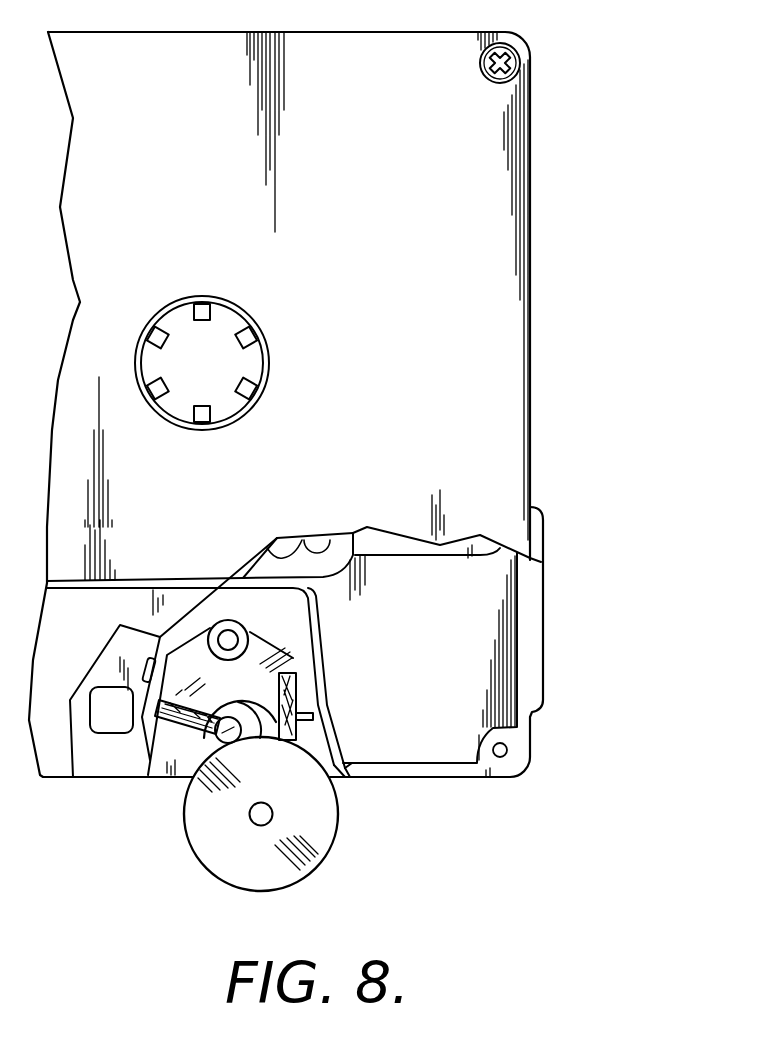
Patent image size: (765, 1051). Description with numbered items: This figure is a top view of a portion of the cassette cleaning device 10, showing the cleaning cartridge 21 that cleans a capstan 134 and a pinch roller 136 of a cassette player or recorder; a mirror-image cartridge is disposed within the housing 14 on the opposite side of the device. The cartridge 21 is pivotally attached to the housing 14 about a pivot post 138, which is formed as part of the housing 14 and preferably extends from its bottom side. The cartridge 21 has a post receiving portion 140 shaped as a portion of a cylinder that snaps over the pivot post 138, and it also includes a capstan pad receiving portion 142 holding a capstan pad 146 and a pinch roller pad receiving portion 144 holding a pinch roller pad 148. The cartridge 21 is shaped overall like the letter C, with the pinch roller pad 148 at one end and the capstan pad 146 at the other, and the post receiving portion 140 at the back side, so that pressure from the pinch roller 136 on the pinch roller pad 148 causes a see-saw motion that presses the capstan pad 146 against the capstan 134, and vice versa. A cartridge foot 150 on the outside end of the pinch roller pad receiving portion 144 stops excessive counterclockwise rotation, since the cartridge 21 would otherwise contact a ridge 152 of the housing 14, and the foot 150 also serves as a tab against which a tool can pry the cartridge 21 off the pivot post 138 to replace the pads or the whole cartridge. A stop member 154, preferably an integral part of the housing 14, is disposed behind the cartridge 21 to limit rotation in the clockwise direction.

The cassette cleaning device 10 is at (629, 472).
The housing 14 is at (533, 637).
The cleaning cartridge 21 is at (168, 780).
The capstan 134 is at (178, 779).
The pinch roller 136 is at (322, 820).
The pivot post 138 is at (243, 629).
The post receiving portion 140 is at (290, 660).
The capstan pad receiving portion 142 is at (153, 735).
The pinch roller pad receiving portion 144 is at (297, 690).
The capstan pad 146 is at (150, 777).
The pinch roller pad 148 is at (350, 777).
The cartridge foot 150 is at (315, 717).
The ridge 152 is at (355, 750).
The stop member 154 is at (130, 634).